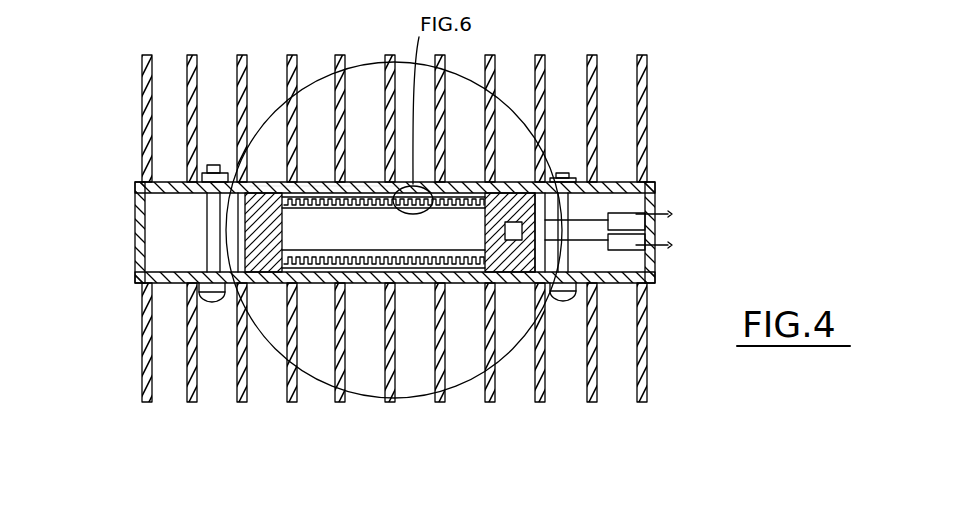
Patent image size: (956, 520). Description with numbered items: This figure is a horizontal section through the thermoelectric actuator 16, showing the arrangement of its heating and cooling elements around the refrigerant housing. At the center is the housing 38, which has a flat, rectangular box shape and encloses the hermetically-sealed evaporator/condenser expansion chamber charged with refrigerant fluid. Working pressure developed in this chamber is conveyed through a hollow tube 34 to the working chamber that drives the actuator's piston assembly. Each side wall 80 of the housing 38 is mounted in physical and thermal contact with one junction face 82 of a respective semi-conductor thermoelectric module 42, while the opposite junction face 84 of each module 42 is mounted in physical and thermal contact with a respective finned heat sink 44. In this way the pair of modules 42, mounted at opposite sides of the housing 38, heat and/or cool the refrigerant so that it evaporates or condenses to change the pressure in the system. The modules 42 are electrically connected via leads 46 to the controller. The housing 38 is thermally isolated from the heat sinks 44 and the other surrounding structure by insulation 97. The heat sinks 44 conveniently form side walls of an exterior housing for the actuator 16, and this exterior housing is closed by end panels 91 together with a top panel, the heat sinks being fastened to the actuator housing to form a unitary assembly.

The thermoelectric actuator 16 is at (100, 240).
The hollow tube 34 is at (538, 183).
The housing 38 is at (306, 183).
The semi-conductor thermoelectric module 42 is at (493, 183).
The finned heat sink 44 is at (146, 186).
The leads 46 is at (670, 206).
The side wall 80 is at (345, 196).
The junction face 82 is at (458, 197).
The opposite junction face 84 is at (445, 212).
The end panel 91 is at (136, 194).
The insulation 97 is at (250, 245).